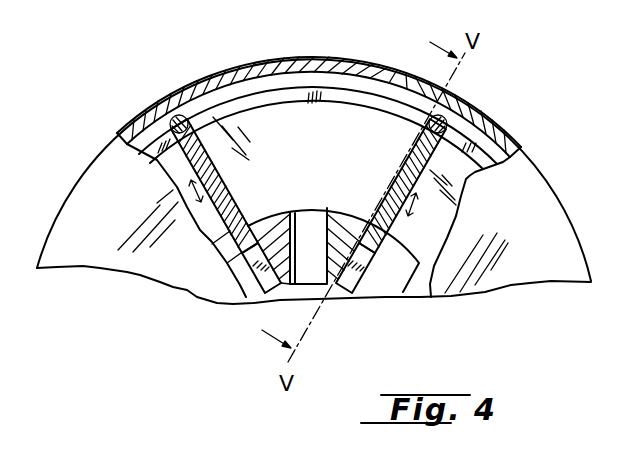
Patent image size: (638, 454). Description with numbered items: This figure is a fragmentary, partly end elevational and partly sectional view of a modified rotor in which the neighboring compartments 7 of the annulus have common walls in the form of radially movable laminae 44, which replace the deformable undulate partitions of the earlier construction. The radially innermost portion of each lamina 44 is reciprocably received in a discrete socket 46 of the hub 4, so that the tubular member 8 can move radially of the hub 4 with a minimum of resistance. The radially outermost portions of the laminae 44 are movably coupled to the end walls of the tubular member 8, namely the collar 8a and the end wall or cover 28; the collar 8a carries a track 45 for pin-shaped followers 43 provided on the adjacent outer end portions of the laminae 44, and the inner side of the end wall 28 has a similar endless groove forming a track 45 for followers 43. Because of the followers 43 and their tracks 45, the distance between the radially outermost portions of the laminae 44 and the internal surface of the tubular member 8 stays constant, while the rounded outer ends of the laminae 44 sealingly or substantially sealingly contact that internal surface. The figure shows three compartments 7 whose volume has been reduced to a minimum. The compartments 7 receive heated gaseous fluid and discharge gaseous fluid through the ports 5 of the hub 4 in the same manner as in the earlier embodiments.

The hub 4 is at (225, 258).
The port 5 is at (320, 208).
The compartment 7 is at (305, 132).
The tubular member 8 is at (310, 57).
The collar 8a is at (359, 128).
The end wall 28 is at (524, 254).
The pin-shaped follower 43 is at (177, 116).
The lamina 44 is at (231, 195).
The track 45 is at (234, 100).
The socket 46 is at (245, 290).